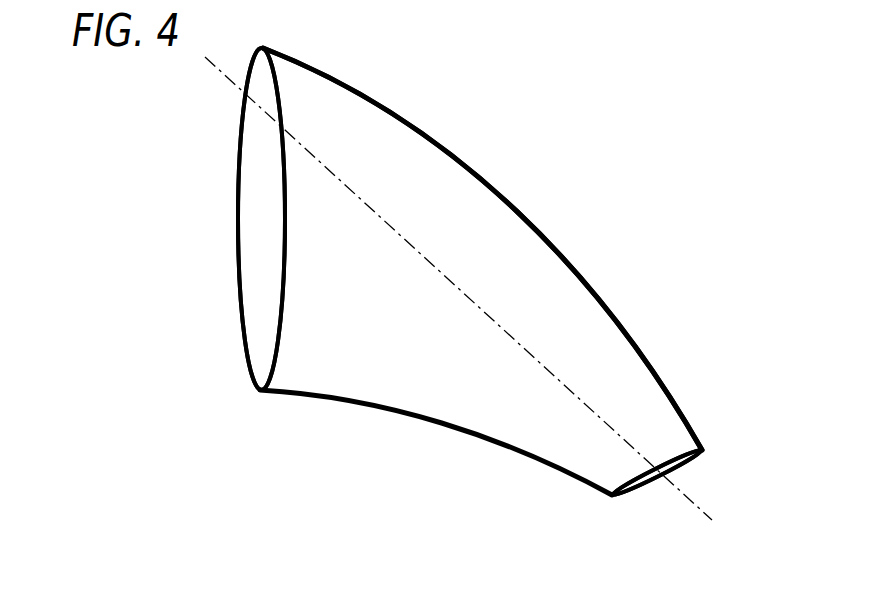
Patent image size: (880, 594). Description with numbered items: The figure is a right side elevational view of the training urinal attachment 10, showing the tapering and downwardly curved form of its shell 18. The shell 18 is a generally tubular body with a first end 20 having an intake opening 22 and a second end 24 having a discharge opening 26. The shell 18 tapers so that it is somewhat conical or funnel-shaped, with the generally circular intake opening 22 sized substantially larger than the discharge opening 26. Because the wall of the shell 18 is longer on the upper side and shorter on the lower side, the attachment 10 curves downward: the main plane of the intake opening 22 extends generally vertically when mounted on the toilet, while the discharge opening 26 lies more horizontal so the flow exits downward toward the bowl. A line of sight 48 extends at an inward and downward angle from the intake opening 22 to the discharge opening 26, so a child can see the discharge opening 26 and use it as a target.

The urinal attachment 10 is at (638, 167).
The shell 18 is at (478, 175).
The first end 20 is at (238, 310).
The intake opening 22 is at (258, 205).
The second end 24 is at (638, 493).
The discharge opening 26 is at (692, 467).
The line of sight 48 is at (458, 283).